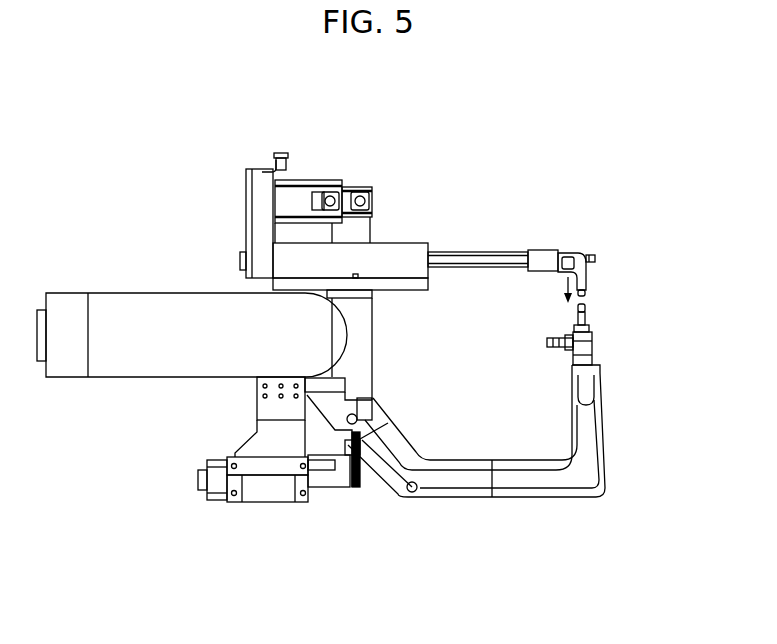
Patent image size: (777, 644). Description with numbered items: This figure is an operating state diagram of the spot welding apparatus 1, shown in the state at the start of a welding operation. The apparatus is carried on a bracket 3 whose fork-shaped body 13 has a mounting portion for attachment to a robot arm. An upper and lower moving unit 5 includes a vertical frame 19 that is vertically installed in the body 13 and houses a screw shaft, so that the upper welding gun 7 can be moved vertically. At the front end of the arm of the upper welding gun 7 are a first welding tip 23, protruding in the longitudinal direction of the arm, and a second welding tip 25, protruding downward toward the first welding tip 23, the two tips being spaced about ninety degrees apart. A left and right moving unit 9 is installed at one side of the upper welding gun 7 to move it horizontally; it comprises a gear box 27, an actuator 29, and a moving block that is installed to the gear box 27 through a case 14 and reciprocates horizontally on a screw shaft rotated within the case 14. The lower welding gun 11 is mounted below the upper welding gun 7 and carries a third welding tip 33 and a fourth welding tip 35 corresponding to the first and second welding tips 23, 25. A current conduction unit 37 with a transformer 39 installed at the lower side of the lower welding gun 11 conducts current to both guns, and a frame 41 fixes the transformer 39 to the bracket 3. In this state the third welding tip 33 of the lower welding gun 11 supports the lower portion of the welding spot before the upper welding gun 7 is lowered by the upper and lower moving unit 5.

The spot welding apparatus 1 is at (465, 140).
The bracket 3 is at (62, 280).
The upper and lower moving unit 5 is at (392, 341).
The upper welding gun 7 is at (506, 240).
The left and right moving unit 9 is at (355, 177).
The lower welding gun 11 is at (520, 507).
The body 13 is at (158, 298).
The case 14 is at (400, 250).
The vertical frame 19 is at (362, 364).
The first welding tip 23 is at (588, 256).
The second welding tip 25 is at (590, 292).
The gear box 27 is at (257, 185).
The actuator 29 is at (318, 178).
The third welding tip 33 is at (590, 318).
The fourth welding tip 35 is at (548, 333).
The current conduction unit 37 is at (278, 512).
The transformer 39 is at (248, 505).
The frame 41 is at (258, 444).